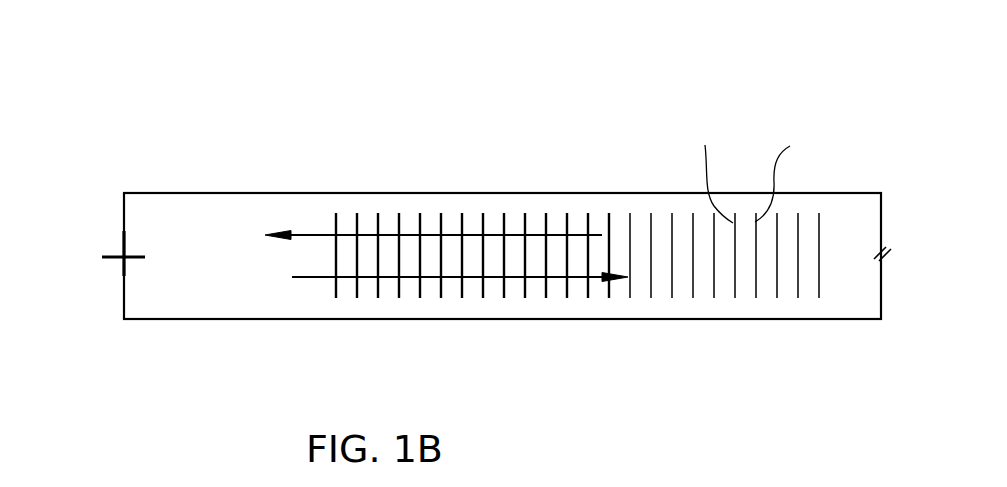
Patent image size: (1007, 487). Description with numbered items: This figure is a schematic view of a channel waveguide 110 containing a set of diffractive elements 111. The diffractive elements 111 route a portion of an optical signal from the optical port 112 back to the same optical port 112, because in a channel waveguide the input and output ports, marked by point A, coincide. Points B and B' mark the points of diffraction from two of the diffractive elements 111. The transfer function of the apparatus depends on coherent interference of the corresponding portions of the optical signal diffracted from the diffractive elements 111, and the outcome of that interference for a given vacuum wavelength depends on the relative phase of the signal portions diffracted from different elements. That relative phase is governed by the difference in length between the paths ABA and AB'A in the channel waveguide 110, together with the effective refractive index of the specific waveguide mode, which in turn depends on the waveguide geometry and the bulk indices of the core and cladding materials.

The channel waveguide 110 is at (512, 147).
The set of diffractive elements 111 is at (828, 327).
The optical port 112 is at (123, 263).